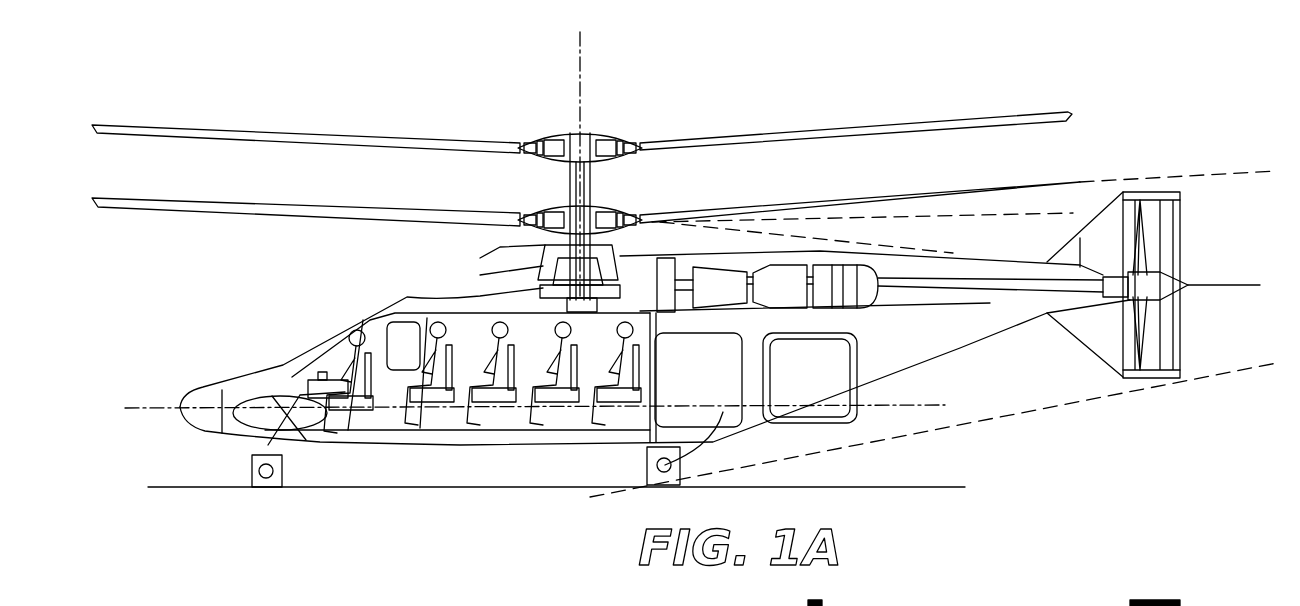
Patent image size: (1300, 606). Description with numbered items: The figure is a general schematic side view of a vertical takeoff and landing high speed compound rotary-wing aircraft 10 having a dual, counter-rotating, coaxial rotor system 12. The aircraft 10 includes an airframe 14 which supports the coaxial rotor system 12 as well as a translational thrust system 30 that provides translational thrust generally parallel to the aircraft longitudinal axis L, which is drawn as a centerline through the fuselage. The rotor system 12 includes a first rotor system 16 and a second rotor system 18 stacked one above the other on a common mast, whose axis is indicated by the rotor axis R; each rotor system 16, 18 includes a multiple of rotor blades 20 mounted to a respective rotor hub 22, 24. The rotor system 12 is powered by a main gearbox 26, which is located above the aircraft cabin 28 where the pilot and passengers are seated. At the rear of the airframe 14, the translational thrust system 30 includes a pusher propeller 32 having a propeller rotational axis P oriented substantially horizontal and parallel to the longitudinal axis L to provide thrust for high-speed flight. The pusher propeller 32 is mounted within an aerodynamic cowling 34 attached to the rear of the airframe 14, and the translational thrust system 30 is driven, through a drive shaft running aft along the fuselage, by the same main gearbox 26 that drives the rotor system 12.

The rotary-wing aircraft 10 is at (880, 88).
The rotor system 12 is at (641, 127).
The airframe 14 is at (407, 293).
The first rotor system 16 is at (553, 128).
The second rotor system 18 is at (624, 212).
The rotor blades 20 is at (773, 207).
The rotor hub 22 is at (604, 138).
The rotor hub 24 is at (540, 200).
The main gearbox 26 is at (503, 262).
The aircraft cabin 28 is at (493, 418).
The translational thrust system 30 is at (1205, 227).
The pusher propeller 32 is at (1148, 257).
The aerodynamic cowling 34 is at (1140, 215).
The rotor axis of rotation R is at (586, 42).
The aircraft longitudinal axis L is at (945, 405).
The propeller rotational axis P is at (1232, 290).